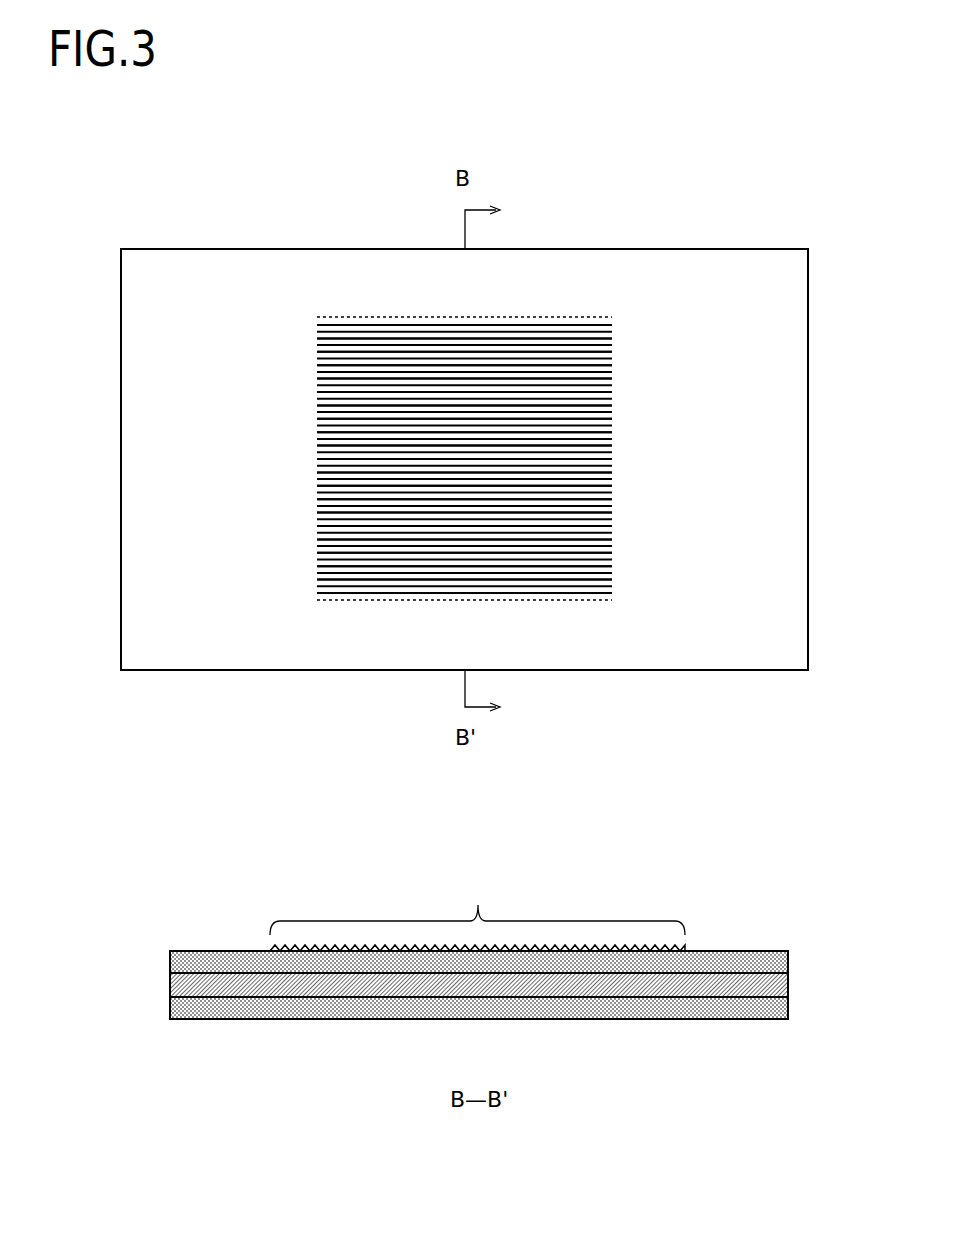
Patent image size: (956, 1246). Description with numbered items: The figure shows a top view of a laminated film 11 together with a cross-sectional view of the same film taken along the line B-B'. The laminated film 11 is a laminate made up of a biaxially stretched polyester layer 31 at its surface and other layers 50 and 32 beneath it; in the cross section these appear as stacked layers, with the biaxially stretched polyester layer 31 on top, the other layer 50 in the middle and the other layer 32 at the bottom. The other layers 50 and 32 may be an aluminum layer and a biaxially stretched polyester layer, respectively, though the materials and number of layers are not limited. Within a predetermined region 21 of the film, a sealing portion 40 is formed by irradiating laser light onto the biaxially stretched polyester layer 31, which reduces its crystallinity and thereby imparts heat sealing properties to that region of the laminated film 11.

The laminated film 11 is at (163, 122).
The biaxially stretched polyester layer 31 is at (190, 263).
The other layer 32 is at (195, 1018).
The sealing portion 40 is at (547, 323).
The predetermined region 21 is at (317, 565).
The other layer 50 is at (245, 973).